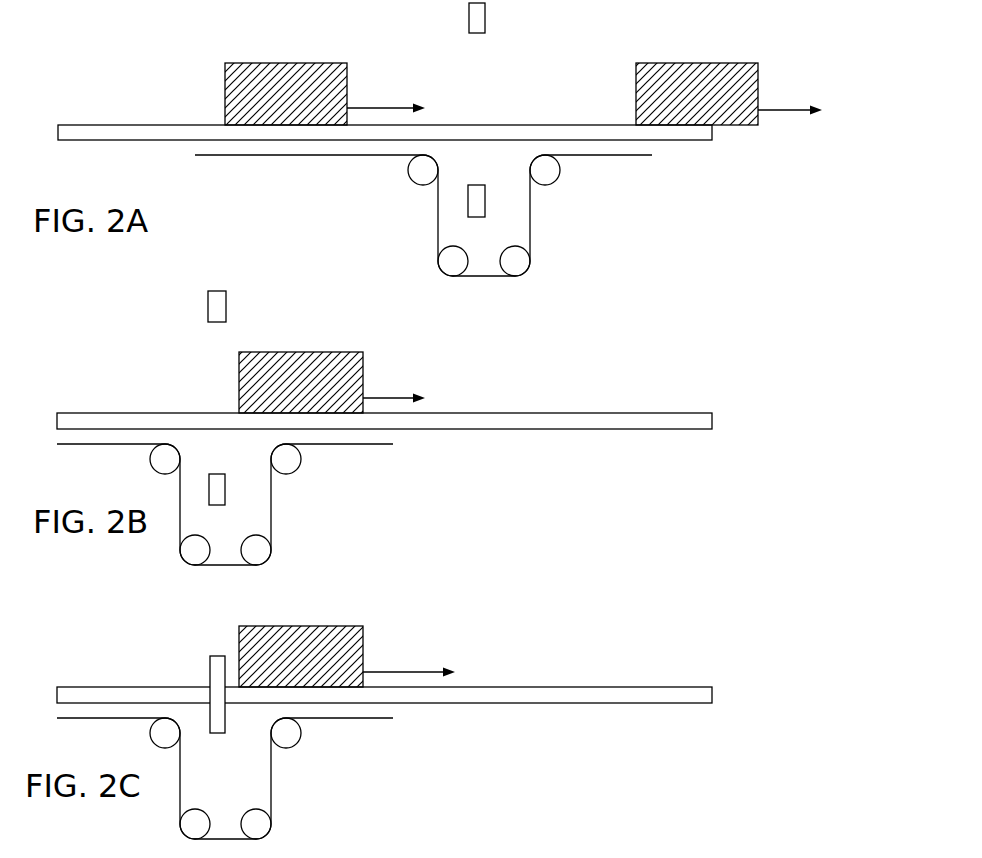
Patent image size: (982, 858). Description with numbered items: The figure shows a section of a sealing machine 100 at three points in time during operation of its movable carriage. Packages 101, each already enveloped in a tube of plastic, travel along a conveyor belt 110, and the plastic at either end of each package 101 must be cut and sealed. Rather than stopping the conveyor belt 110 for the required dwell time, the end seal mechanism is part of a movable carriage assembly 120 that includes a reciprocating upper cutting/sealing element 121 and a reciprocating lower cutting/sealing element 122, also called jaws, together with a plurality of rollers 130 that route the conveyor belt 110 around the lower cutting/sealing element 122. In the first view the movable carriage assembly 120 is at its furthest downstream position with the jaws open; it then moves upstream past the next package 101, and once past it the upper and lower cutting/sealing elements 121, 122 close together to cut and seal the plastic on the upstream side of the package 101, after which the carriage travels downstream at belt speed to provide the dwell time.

In FIG. 2A, the sealing machine 100 is at (84, 87).
In FIG. 2A, the package 101 is at (225, 93).
In FIG. 2B, the package 101 is at (363, 372).
In FIG. 2C, the package 101 is at (363, 655).
In FIG. 2A, the conveyor belt 110 is at (703, 143).
In FIG. 2B, the conveyor belt 110 is at (652, 429).
In FIG. 2C, the conveyor belt 110 is at (665, 704).
In FIG. 2A, the movable carriage assembly 120 is at (536, 297).
In FIG. 2A, the upper cutting/sealing element 121 is at (468, 22).
In FIG. 2A, the lower cutting/sealing element 122 is at (468, 207).
In FIG. 2A, the rollers 130 is at (552, 181).